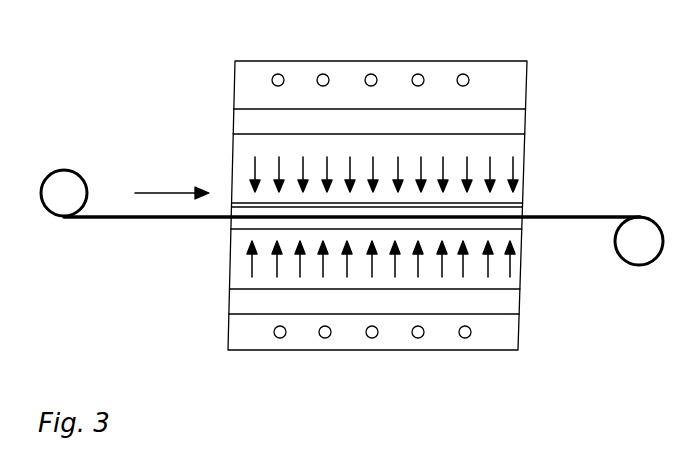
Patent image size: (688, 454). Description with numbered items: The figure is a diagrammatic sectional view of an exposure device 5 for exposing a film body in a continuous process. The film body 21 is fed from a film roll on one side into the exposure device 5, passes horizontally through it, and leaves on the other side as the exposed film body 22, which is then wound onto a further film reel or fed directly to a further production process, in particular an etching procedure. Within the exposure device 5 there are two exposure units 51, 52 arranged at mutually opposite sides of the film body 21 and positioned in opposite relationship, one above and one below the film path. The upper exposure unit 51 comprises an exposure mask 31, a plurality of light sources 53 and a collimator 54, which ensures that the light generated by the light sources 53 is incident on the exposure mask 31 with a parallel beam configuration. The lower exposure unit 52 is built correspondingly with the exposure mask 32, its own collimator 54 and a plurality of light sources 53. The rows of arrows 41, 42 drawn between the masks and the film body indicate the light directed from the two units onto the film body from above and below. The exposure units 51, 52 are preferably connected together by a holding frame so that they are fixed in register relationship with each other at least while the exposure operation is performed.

The exposure device 5 is at (579, 77).
The film body 21 is at (155, 228).
The exposed film body 22 is at (595, 213).
The exposure mask 31 is at (530, 205).
The exposure mask 32 is at (523, 225).
The downward air jets 41 is at (384, 164).
The upward air jets 42 is at (381, 265).
The exposure unit 51 is at (230, 134).
The exposure unit 52 is at (222, 300).
The light sources 53 is at (285, 73).
The collimator 54 is at (525, 118).